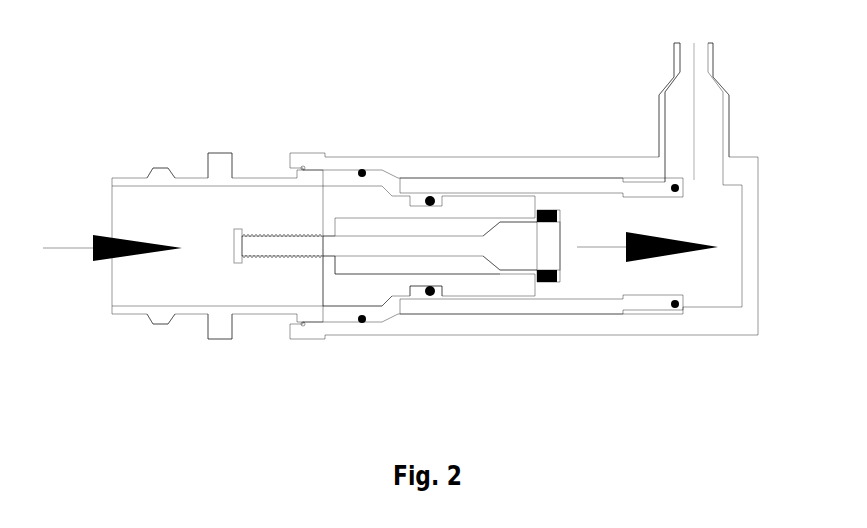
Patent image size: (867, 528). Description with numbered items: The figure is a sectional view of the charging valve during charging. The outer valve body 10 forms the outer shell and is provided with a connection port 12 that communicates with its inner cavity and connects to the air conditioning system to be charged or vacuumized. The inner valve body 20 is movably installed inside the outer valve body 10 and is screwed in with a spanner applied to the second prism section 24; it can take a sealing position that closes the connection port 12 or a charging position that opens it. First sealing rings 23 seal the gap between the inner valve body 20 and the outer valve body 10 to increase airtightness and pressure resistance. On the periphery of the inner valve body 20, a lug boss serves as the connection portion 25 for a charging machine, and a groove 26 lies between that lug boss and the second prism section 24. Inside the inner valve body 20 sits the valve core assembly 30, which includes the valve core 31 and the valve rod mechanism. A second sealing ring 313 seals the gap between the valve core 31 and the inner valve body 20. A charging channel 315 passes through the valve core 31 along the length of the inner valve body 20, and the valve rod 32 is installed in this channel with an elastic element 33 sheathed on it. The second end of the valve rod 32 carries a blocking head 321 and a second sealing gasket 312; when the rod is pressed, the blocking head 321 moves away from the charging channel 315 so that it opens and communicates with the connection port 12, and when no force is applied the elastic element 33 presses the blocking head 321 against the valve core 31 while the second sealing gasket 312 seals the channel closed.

The outer valve body 10 is at (505, 322).
The connection port 12 is at (707, 120).
The inner valve body 20 is at (620, 303).
The first sealing ring 23 is at (362, 172).
The second prism section 24 is at (220, 337).
The connection portion 25 is at (158, 322).
The groove 26 is at (192, 173).
The valve core assembly 30 is at (317, 278).
The valve core 31 is at (353, 293).
The second sealing gasket 312 is at (547, 283).
The second sealing ring 313 is at (432, 291).
The charging channel 315 is at (403, 263).
The valve rod 32 is at (323, 235).
The blocking head 321 is at (520, 238).
The elastic element 33 is at (277, 233).